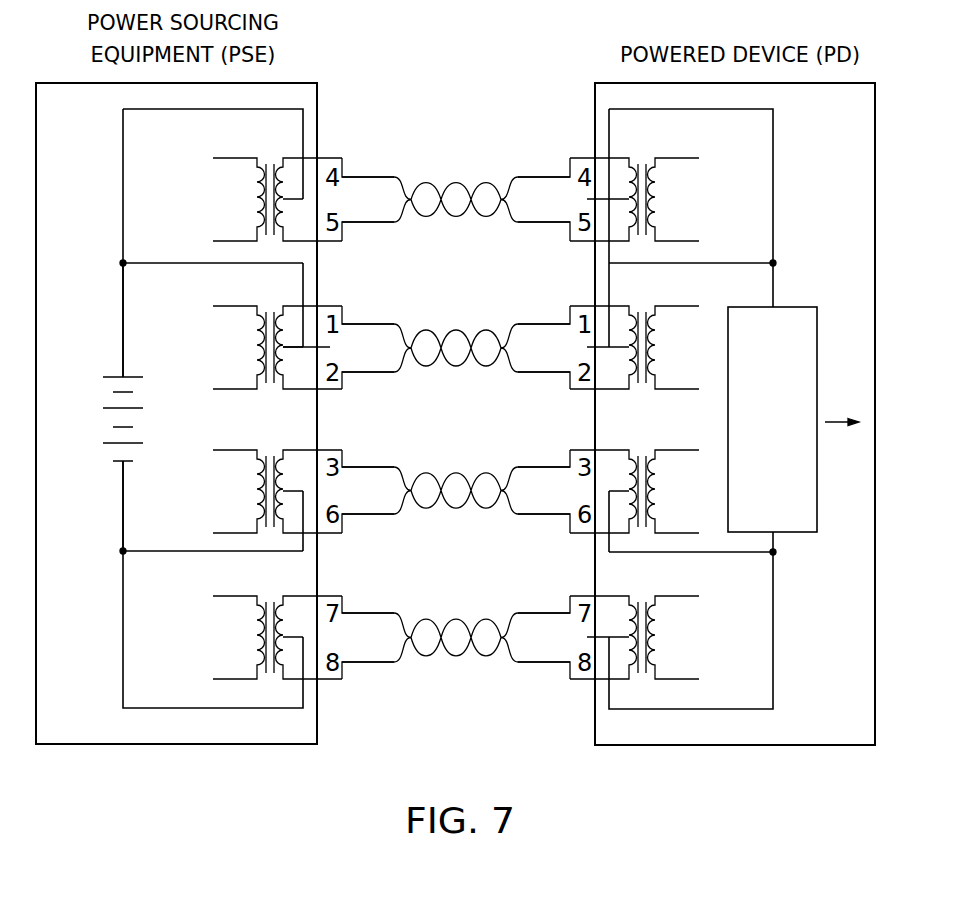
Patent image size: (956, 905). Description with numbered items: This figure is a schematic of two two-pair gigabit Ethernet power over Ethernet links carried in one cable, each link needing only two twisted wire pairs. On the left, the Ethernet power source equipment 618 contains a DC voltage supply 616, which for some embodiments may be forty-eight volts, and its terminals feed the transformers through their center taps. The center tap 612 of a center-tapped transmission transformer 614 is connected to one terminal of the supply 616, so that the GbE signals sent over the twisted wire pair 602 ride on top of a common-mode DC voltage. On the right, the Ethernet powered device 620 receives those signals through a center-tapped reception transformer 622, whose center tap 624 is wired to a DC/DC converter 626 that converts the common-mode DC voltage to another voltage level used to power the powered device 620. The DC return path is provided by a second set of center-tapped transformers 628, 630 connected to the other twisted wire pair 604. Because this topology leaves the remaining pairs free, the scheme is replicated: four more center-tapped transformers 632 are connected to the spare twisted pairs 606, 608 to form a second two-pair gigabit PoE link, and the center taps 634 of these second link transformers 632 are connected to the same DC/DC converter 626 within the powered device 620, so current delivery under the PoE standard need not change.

The twisted wire pair 602 is at (454, 322).
The twisted wire pair 604 is at (454, 465).
The spare twisted pair 606 is at (454, 611).
The spare twisted pair 608 is at (455, 173).
The center tap 612 is at (330, 347).
The center-tapped transmission transformer 614 is at (268, 305).
The DC voltage supply 616 is at (118, 377).
The Ethernet power source equipment 618 is at (90, 745).
The Ethernet powered device 620 is at (808, 745).
The center-tapped reception transformer 622 is at (644, 305).
The center tap 624 is at (587, 347).
The DC/DC converter 626 is at (756, 474).
The center-tapped transformer 628 is at (644, 450).
The center-tapped transformer 630 is at (268, 449).
The second link transformer 632 is at (268, 157).
The center tap 634 is at (587, 199).